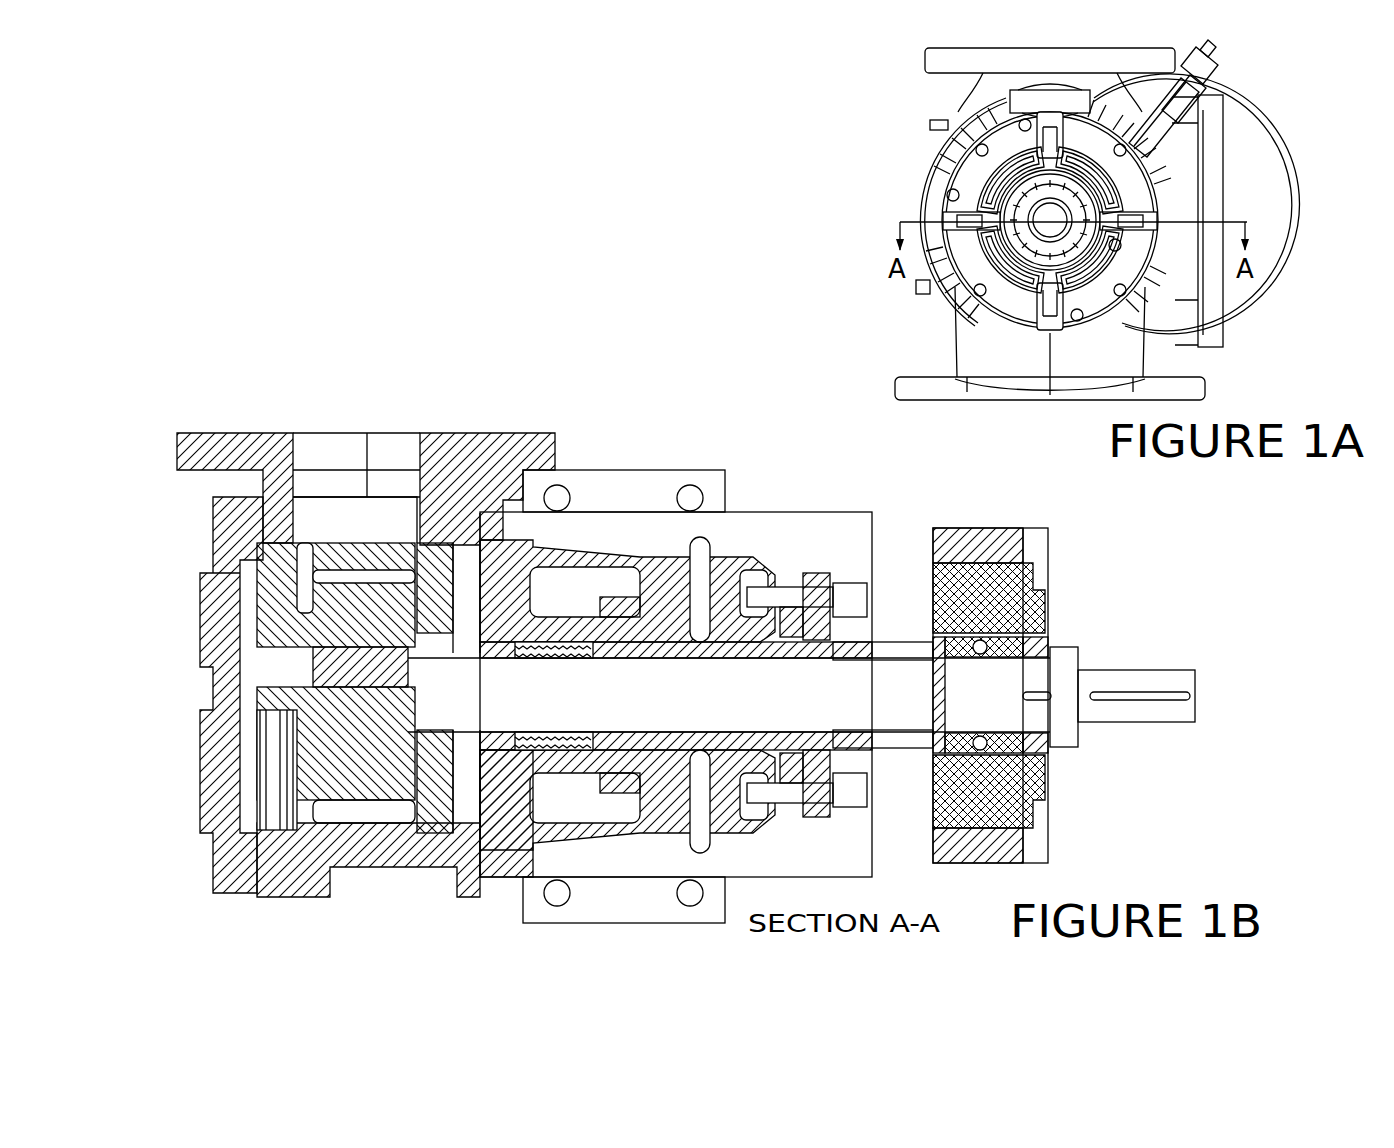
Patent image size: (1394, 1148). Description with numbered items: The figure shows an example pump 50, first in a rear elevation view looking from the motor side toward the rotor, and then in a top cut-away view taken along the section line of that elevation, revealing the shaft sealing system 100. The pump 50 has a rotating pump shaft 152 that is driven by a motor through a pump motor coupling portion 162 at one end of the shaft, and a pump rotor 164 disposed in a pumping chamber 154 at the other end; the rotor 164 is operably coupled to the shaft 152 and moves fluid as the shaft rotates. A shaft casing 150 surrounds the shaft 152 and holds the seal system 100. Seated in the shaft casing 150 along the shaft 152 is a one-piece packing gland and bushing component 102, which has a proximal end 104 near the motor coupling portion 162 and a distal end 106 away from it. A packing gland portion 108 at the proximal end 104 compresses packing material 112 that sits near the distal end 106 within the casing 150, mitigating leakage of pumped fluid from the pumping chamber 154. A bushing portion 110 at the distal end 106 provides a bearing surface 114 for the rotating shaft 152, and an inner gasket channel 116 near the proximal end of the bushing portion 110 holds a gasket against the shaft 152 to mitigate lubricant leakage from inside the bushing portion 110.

In FIG. 1A, the pump 50 is at (1253, 80).
In FIG. 1B, the pump 50 is at (245, 315).
In FIG. 1B, the system 100 is at (843, 758).
In FIG. 1B, the packing gland and bushing component 102 is at (842, 560).
In FIG. 1B, the proximal end 104 is at (843, 647).
In FIG. 1B, the distal end 106 is at (588, 718).
In FIG. 1B, the packing gland portion 108 is at (833, 593).
In FIG. 1B, the bushing portion 110 is at (766, 633).
In FIG. 1B, the packing material 112 is at (520, 752).
In FIG. 1B, the bearing surface 114 is at (690, 720).
In FIG. 1B, the inner gasket channel 116 is at (745, 652).
In FIG. 1B, the shaft casing 150 is at (652, 618).
In FIG. 1B, the pump shaft 152 is at (915, 678).
In FIG. 1B, the pumping chamber 154 is at (468, 556).
In FIG. 1B, the pump motor coupling portion 162 is at (1083, 752).
In FIG. 1B, the pump rotor 164 is at (372, 565).